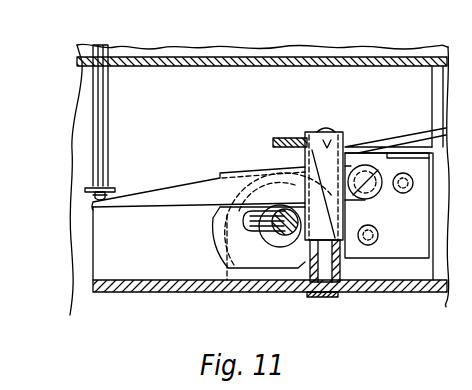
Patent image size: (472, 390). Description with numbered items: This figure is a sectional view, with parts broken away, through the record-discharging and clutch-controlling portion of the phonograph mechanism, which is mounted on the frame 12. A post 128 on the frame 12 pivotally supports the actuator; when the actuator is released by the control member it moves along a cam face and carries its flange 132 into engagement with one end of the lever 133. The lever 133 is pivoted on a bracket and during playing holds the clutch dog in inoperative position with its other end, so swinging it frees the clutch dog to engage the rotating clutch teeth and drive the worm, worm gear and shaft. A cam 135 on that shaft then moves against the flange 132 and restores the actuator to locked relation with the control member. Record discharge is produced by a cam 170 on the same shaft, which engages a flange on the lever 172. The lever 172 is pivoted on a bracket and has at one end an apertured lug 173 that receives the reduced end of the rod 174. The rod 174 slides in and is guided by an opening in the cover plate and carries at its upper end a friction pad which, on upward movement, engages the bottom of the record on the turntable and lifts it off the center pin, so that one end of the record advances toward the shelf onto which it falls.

The frame 12 is at (158, 283).
The post 128 is at (320, 262).
The flange 132 is at (345, 150).
The lever 133 is at (293, 137).
The cam 135 is at (232, 250).
The cam 170 is at (223, 218).
The lever 172 is at (170, 198).
The apertured lug 173 is at (88, 190).
The rod 174 is at (103, 127).